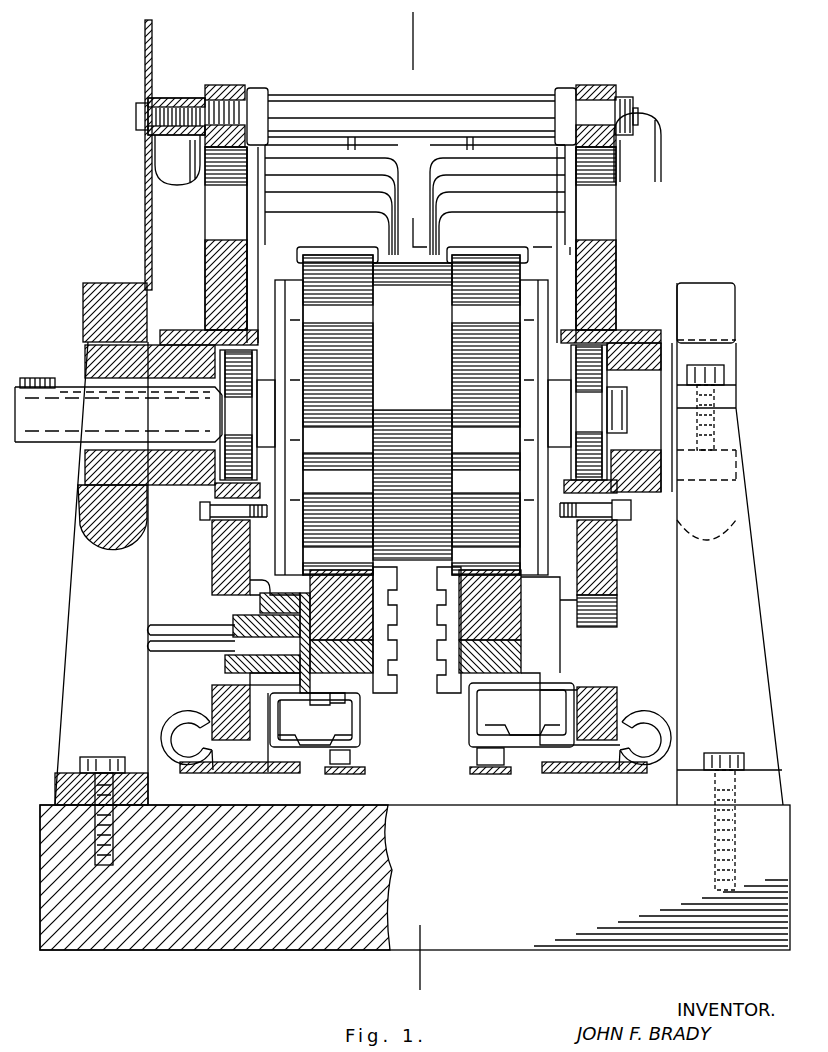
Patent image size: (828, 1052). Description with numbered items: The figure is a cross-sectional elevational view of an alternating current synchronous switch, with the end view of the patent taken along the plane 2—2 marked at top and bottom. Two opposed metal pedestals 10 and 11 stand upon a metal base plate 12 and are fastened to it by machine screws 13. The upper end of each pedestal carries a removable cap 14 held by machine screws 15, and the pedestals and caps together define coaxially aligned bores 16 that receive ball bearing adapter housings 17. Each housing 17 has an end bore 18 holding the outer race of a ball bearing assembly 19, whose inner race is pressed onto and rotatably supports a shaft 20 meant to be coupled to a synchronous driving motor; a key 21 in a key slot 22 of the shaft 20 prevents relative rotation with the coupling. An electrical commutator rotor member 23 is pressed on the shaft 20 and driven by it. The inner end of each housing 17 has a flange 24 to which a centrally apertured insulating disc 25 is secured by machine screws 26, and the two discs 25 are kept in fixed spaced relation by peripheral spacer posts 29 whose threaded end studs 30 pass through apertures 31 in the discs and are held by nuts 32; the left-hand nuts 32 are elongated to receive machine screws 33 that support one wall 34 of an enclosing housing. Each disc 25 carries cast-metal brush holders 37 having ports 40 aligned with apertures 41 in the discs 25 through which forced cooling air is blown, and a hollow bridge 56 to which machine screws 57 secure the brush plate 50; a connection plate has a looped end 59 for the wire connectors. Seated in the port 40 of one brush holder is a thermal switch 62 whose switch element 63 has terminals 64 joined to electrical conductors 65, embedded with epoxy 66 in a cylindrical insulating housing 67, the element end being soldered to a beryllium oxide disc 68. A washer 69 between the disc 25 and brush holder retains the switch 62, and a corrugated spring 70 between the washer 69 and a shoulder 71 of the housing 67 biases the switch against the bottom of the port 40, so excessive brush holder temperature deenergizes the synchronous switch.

The section plane 2— 2 is at (420, 30).
The pedestal 10 is at (72, 657).
The pedestal 11 is at (757, 630).
The base plate 12 is at (175, 948).
The machine screw 13 is at (740, 760).
The cap 14 is at (107, 283).
The machine screw 15 is at (715, 370).
The bore 16 is at (100, 342).
The ball bearing adapter housing 17 is at (178, 330).
The end bore 18 is at (190, 488).
The ball bearing assembly 19 is at (230, 405).
The shaft 20 is at (45, 437).
The key 21 is at (35, 378).
The key slot 22 is at (70, 390).
The commutator rotor member 23 is at (424, 410).
The flange 24 is at (260, 290).
The insulating disc 25 is at (212, 558).
The machine screw 26 is at (204, 528).
The spacer post 29 is at (441, 100).
The threaded end stud 30 is at (222, 86).
The aperture 31 is at (238, 86).
The nut 32 is at (171, 97).
The machine screw 33 is at (139, 129).
The wall 34 is at (143, 47).
The brush holder 37 is at (445, 170).
The port 40 is at (290, 582).
The aperture 41 is at (220, 242).
The brush plate 50 is at (490, 770).
The bridge 56 is at (368, 725).
The machine screw 57 is at (585, 770).
The looped end 59 is at (172, 170).
The thermal switch 62 is at (255, 602).
The switch element 63 is at (295, 682).
The terminal 64 is at (302, 628).
The electrical conductor 65 is at (160, 633).
The epoxy 66 is at (315, 720).
The cylindrical housing 67 is at (228, 663).
The beryllium oxide disc 68 is at (335, 686).
The washer 69 is at (252, 680).
The corrugated spring 70 is at (270, 772).
The shoulder 71 is at (290, 720).